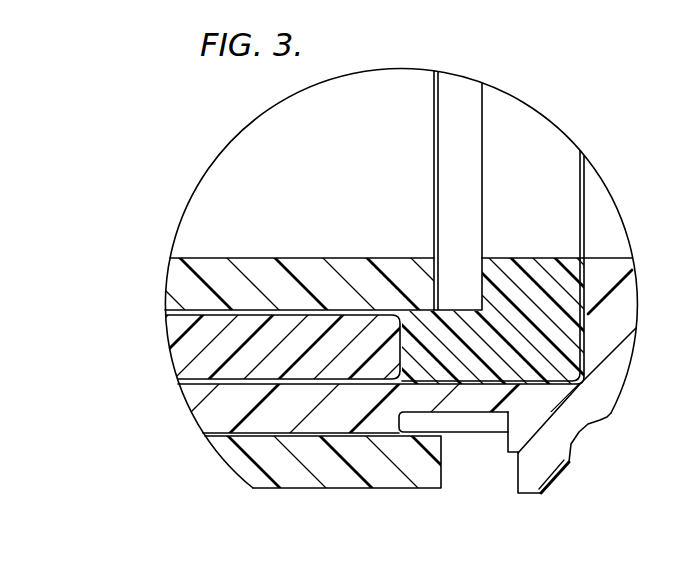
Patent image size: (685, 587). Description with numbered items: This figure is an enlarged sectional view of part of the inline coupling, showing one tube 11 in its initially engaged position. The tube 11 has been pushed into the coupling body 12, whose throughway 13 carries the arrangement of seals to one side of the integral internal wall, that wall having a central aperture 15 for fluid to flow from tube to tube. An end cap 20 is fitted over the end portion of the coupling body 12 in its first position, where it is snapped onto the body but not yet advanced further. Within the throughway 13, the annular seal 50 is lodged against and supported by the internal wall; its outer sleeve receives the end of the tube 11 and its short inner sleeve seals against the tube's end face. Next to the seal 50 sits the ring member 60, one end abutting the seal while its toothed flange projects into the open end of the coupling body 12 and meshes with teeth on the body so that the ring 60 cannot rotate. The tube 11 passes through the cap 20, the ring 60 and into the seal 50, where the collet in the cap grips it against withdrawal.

The tube 11 is at (198, 263).
The throughway 13 is at (240, 382).
The ring member 60 is at (177, 337).
The coupling body 12 is at (200, 408).
The end cap 20 is at (237, 460).
The annular seal 50 is at (492, 360).
The central aperture 15 is at (600, 210).